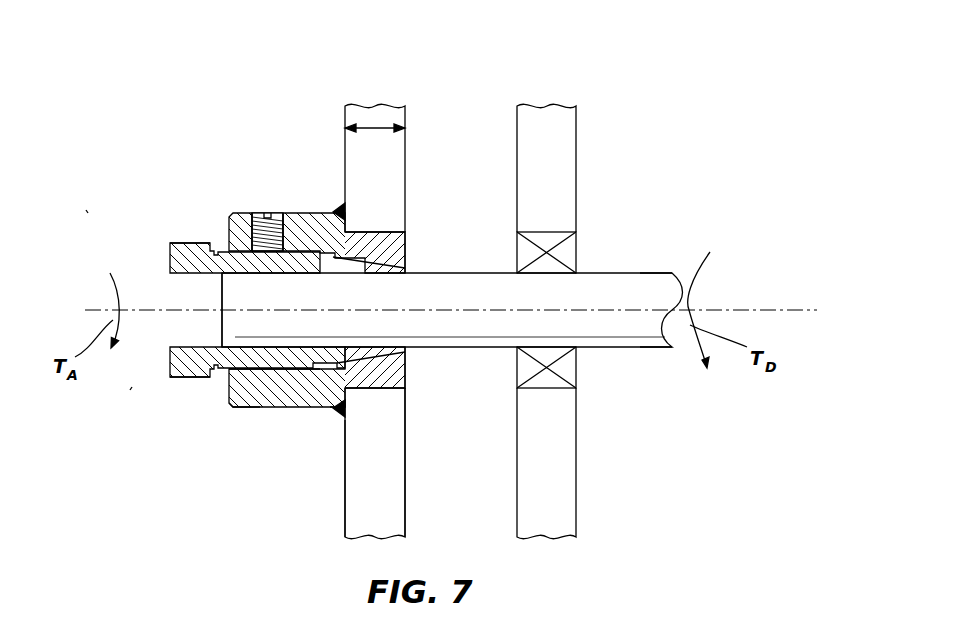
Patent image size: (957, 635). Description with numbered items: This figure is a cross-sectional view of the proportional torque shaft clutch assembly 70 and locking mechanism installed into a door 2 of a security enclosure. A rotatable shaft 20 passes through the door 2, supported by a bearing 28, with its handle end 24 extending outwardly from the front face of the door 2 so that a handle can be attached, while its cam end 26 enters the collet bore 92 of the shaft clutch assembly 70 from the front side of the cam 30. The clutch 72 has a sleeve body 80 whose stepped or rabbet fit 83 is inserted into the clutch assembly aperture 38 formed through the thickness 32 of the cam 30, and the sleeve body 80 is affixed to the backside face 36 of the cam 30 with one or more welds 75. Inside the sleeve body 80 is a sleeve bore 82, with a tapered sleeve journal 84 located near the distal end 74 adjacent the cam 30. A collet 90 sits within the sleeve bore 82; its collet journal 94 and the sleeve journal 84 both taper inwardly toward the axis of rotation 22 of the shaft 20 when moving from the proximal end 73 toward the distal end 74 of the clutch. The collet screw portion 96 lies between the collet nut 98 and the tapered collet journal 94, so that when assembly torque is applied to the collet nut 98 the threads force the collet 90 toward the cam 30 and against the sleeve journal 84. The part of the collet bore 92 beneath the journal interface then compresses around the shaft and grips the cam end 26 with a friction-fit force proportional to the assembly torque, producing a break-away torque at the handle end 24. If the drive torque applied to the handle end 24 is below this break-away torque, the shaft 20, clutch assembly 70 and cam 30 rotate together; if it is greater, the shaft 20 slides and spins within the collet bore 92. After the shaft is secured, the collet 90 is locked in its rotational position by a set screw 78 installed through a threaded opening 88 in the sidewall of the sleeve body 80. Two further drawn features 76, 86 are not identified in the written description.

The door 2 is at (578, 150).
The rotatable shaft 20 is at (478, 349).
The axis of rotation 22 is at (750, 310).
The handle end 24 is at (660, 285).
The cam end 26 is at (221, 295).
The bearing 28 is at (578, 248).
The cam 30 is at (407, 145).
The thickness 32 is at (375, 122).
The backside face 36 is at (343, 498).
The clutch assembly aperture 38 is at (393, 390).
The shaft clutch assembly 70 is at (157, 80).
The clutch 72 is at (130, 390).
The proximal end 73 is at (88, 213).
The distal end 74 is at (430, 207).
The welds 75 is at (338, 410).
The tapered surface 76 is at (408, 258).
The set screw 78 is at (273, 213).
The sleeve body 80 is at (275, 408).
The sleeve bore 82 is at (346, 220).
The stepped or rabbet fit 83 is at (352, 404).
The tapered sleeve journal 84 is at (398, 358).
The hub 86 is at (243, 405).
The threaded opening 88 is at (238, 215).
The collet 90 is at (190, 377).
The collet bore 92 is at (172, 283).
The collet journal 94 is at (353, 363).
The collet screw portion 96 is at (258, 369).
The collet nut 98 is at (185, 243).